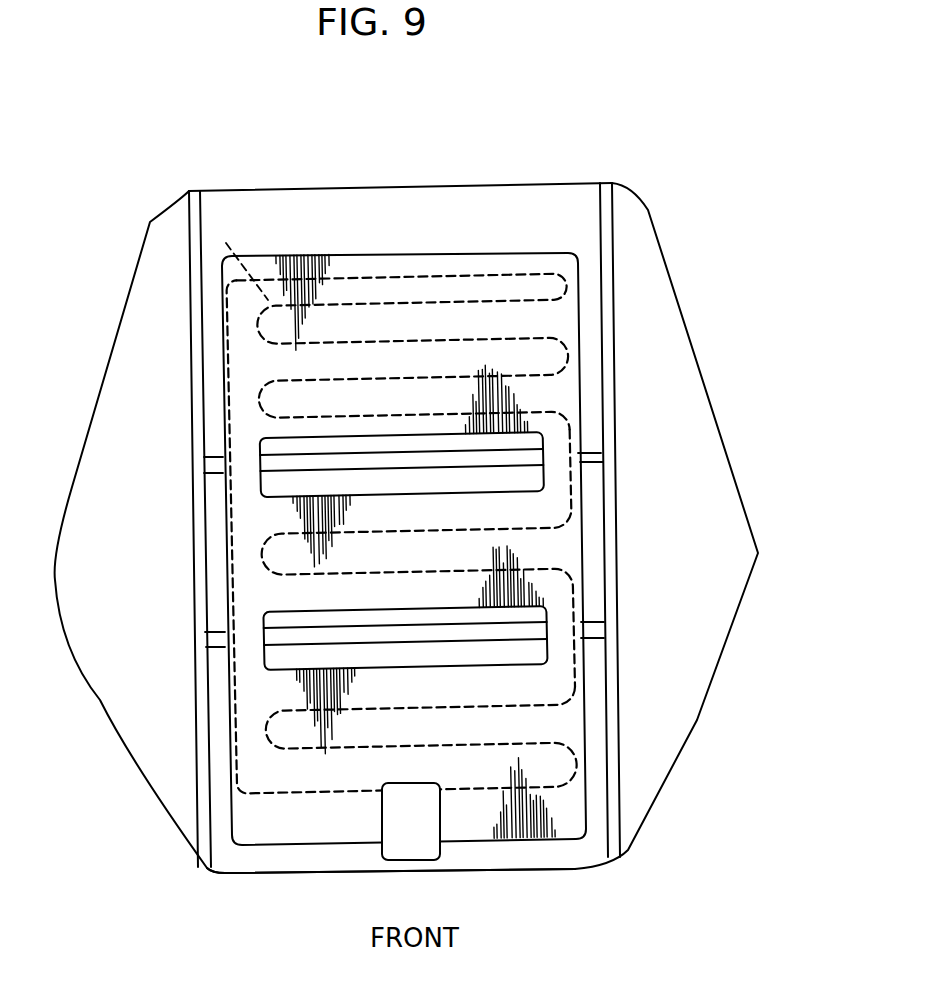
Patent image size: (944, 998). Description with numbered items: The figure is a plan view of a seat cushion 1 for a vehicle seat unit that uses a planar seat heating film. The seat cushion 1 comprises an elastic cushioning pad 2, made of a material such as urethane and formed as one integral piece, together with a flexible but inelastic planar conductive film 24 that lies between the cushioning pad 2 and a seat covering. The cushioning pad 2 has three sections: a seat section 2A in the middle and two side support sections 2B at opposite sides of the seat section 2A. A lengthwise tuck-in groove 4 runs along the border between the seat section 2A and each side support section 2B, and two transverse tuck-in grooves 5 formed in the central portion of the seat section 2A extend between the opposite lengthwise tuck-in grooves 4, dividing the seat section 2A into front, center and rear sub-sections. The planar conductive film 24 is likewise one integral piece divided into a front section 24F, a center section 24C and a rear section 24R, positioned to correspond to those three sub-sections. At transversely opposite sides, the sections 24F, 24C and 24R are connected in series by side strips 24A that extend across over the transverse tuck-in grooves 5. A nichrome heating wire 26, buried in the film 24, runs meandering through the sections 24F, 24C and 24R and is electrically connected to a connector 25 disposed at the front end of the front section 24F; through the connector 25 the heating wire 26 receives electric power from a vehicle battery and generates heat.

The seat cushion 1 is at (667, 192).
The elastic cushioning pad 2 is at (287, 876).
The seat section 2A is at (371, 210).
The side support sections 2B is at (109, 569).
The lengthwise tuck-in groove 4 is at (608, 255).
The transverse tuck-in grooves 5 is at (213, 460).
The planar conductive film 24 is at (533, 252).
The side strips 24A is at (250, 474).
The center section 24C is at (556, 548).
The front section 24F is at (562, 725).
The rear section 24R is at (556, 330).
The connector 25 is at (432, 860).
The heating wire 26 is at (241, 258).